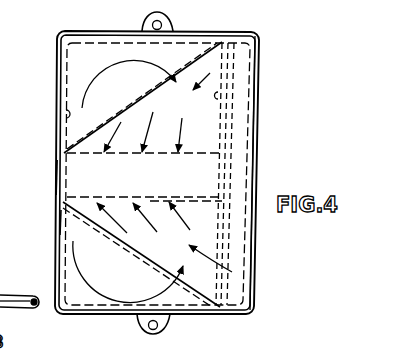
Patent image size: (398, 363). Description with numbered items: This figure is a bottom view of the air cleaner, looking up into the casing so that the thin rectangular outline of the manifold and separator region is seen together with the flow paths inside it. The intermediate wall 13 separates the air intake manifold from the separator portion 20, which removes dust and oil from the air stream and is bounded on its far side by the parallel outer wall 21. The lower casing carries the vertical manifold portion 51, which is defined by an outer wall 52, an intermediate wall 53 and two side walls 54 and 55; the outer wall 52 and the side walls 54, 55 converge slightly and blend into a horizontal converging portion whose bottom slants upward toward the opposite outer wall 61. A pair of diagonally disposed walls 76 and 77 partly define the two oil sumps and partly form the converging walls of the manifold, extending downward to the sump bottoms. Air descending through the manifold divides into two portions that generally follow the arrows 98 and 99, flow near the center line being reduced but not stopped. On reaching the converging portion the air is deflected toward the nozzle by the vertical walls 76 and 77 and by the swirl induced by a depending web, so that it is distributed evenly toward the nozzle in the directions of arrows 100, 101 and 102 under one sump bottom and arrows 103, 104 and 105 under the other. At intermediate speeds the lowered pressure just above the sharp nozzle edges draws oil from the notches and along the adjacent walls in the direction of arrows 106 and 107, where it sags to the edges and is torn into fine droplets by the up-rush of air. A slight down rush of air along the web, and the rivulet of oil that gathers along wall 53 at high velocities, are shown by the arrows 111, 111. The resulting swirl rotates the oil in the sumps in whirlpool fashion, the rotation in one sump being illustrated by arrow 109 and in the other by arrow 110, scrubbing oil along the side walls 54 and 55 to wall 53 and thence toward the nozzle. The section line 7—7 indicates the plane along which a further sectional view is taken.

The section line 7- 7 is at (103, 58).
The intermediate wall 13 is at (218, 95).
The separator portion 20 is at (56, 176).
The outer wall 21 is at (64, 114).
The vertical manifold portion 51 is at (246, 49).
The outer wall 52 is at (255, 142).
The intermediate wall 53 is at (250, 158).
The side wall 54 is at (240, 315).
The side wall 55 is at (241, 32).
The outer wall 61 is at (60, 222).
The diagonally disposed wall 76 is at (111, 123).
The diagonally disposed wall 77 is at (141, 268).
The arrow 98 is at (226, 67).
The arrow 99 is at (230, 272).
The arrow 100 is at (190, 119).
The arrow 101 is at (155, 129).
The arrow 102 is at (126, 133).
The arrow 103 is at (186, 213).
The arrow 104 is at (151, 221).
The arrow 105 is at (114, 216).
The arrow 106 is at (222, 160).
The arrow 107 is at (222, 192).
The arrow 109 is at (112, 67).
The arrow 110 is at (103, 292).
The arrows 111 is at (214, 197).